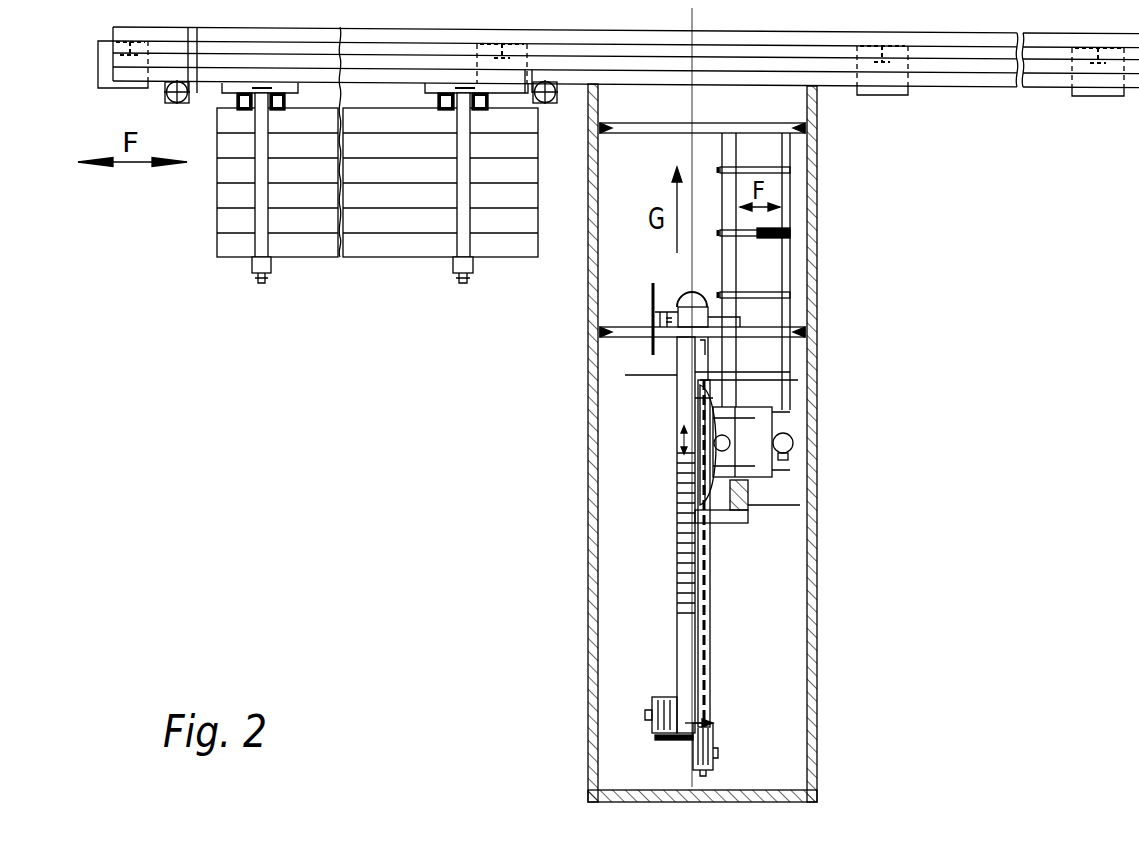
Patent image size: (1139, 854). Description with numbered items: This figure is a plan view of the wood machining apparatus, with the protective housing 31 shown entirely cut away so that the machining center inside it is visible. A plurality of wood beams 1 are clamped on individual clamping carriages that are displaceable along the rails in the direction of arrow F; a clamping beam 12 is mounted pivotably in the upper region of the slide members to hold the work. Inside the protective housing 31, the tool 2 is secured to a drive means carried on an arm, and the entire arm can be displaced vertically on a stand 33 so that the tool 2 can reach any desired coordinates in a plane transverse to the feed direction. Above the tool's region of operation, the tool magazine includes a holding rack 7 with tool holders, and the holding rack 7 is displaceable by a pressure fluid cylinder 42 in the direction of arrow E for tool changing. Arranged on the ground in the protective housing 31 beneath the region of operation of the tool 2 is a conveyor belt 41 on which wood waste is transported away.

The wood beams 1 is at (430, 245).
The clamping beam 12 is at (265, 218).
The conveyor belt 41 is at (625, 257).
The tool 2 is at (652, 353).
The pressure fluid cylinder 42 is at (757, 230).
The holding rack 7 is at (732, 273).
The stand 33 is at (780, 475).
The protective housing 31 is at (817, 605).